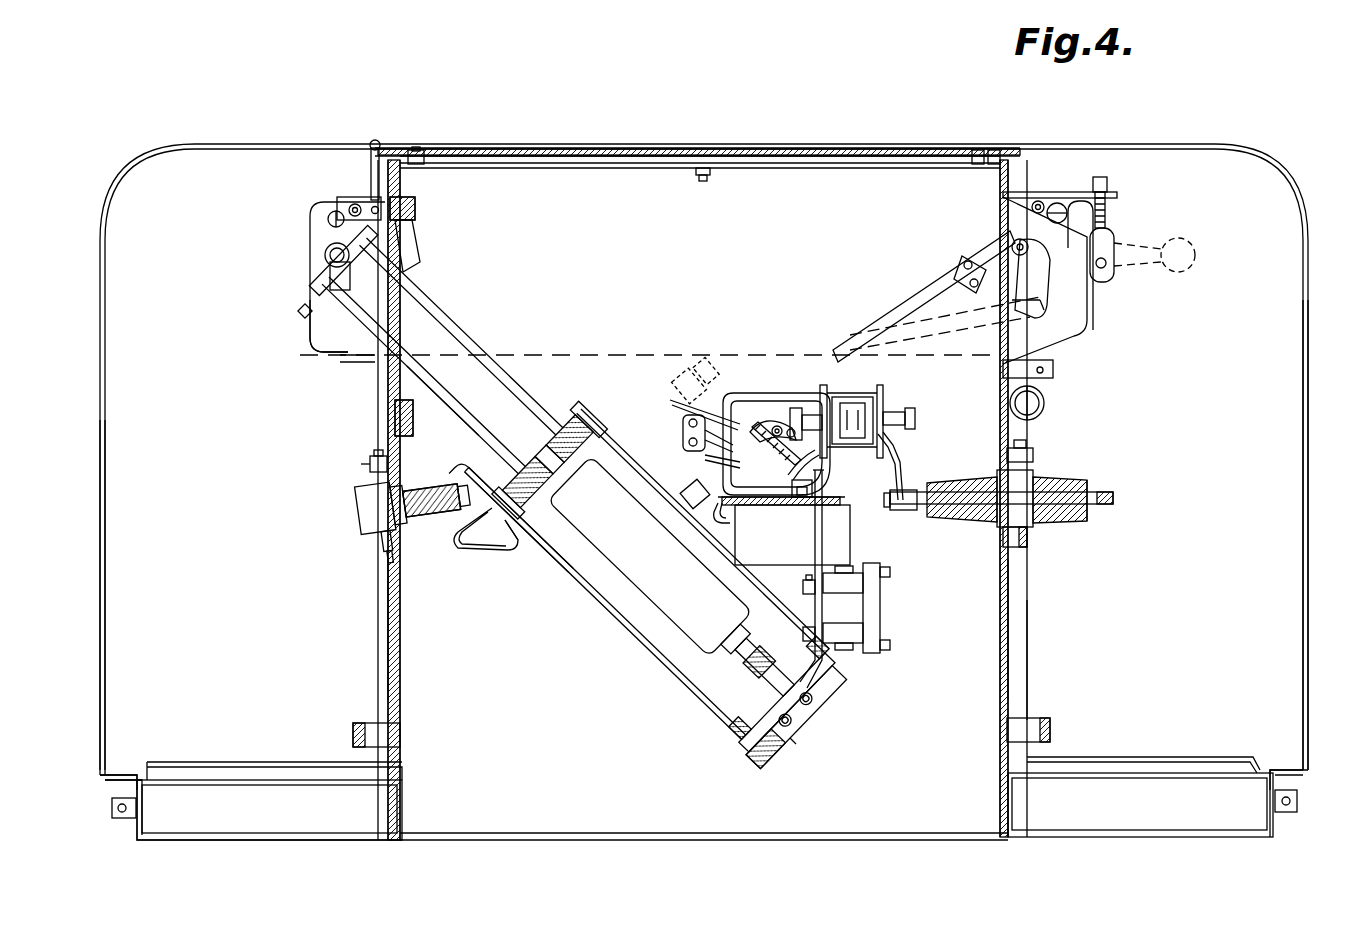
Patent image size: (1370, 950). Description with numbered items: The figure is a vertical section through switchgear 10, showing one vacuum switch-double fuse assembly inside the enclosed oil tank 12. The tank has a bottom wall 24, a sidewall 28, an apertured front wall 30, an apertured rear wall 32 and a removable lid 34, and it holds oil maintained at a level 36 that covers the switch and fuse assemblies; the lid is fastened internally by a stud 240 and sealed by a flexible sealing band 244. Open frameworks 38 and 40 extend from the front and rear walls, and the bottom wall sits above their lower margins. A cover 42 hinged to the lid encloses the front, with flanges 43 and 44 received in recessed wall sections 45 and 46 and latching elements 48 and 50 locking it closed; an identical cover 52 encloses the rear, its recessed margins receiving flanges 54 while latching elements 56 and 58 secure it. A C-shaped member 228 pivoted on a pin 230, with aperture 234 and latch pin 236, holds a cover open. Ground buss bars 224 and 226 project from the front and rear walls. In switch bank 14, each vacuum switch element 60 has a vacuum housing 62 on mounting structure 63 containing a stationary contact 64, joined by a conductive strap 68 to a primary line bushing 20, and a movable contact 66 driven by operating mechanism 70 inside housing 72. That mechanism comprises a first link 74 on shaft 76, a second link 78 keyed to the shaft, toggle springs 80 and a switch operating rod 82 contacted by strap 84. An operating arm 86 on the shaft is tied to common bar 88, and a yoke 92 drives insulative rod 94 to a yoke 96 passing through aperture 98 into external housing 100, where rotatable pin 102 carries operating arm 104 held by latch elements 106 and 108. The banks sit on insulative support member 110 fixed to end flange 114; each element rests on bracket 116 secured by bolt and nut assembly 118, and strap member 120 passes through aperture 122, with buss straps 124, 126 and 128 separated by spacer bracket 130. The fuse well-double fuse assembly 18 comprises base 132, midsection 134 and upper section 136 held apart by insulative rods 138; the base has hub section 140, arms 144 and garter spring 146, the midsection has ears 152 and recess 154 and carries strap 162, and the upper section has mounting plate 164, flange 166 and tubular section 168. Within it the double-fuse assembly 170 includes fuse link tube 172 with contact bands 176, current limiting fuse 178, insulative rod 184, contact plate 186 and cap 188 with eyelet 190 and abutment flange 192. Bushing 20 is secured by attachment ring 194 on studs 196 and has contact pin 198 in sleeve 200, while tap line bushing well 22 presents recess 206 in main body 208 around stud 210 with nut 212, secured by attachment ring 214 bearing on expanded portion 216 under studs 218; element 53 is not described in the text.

The switchgear 10 is at (1186, 98).
The oil tank 12 is at (770, 135).
The switch bank 14 is at (794, 468).
The fuse well-double fuse assembly 18 is at (582, 513).
The primary line bushing 20 is at (1034, 494).
The tap line bushing well 22 is at (376, 501).
The bottom wall 24 is at (655, 835).
The sidewall 28 is at (832, 197).
The front wall 30 is at (1008, 592).
The rear wall 32 is at (400, 645).
The lid 34 is at (535, 150).
The oil level 36 is at (650, 352).
The framework 38 is at (1168, 835).
The framework 40 is at (272, 833).
The cover 42 is at (1308, 410).
The flange 43 is at (1015, 633).
The flange 44 is at (1117, 778).
The wall section 45 is at (1027, 680).
The wall section 46 is at (1160, 757).
The latching element 48 is at (1290, 785).
The latching element 50 is at (1298, 803).
The cover 52 is at (100, 372).
The panel strip 53 is at (388, 632).
The flange 54 is at (262, 775).
The latching element 56 is at (130, 785).
The latch element 58 is at (112, 808).
The vacuum switch element 60 is at (891, 451).
The vacuum housing 62 is at (805, 412).
The mounting structure 63 is at (838, 391).
The stationary contact 64 is at (892, 442).
The movable contact 66 is at (909, 408).
The conductive strap 68 is at (922, 486).
The operating mechanism 70 is at (733, 449).
The housing 72 is at (778, 425).
The first link 74 is at (763, 420).
The shaft 76 is at (693, 404).
The second link 78 is at (730, 466).
The toggle springs 80 is at (750, 442).
The switch operating rod 82 is at (792, 427).
The conductive strap 84 is at (807, 460).
The operating arm 86 is at (718, 508).
The bar 88 is at (690, 370).
The yoke 92 is at (683, 430).
The insulative rod 94 is at (922, 305).
The yoke 96 is at (970, 262).
The aperture 98 is at (1020, 313).
The external housing 100 is at (1086, 297).
The rotatable pin 102 is at (1013, 246).
The operating arm 104 is at (1196, 250).
The latch element 106 is at (1053, 369).
The latch element 108 is at (1109, 237).
The support member 110 is at (900, 509).
The end flange 114 is at (850, 546).
The bracket 116 is at (760, 506).
The bolt and nut assembly 118 is at (805, 499).
The conductive strap member 120 is at (815, 603).
The aperture 122 is at (822, 490).
The buss strap 124 is at (866, 635).
The buss strap 126 is at (808, 577).
The buss strap 128 is at (866, 583).
The spacer bracket 130 is at (878, 607).
The base 132 is at (798, 740).
The midsection 134 is at (577, 397).
The upper section 136 is at (345, 371).
The insulative rods 138 is at (446, 306).
The hub section 140 is at (757, 735).
The arms 144 is at (772, 758).
The garter spring 146 is at (796, 725).
The ears 152 is at (540, 540).
The recess 154 is at (580, 430).
The conductive strap 162 is at (500, 560).
The mounting plate 164 is at (412, 258).
The external flange 166 is at (395, 416).
The tubular section 168 is at (322, 351).
The double-fuse assembly 170 is at (483, 370).
The fuse link tube 172 is at (755, 672).
The electrical contact bands 176 is at (672, 682).
The current limiting fuse 178 is at (620, 570).
The insulative rod 184 is at (452, 380).
The contact plate 186 is at (590, 438).
The cap 188 is at (330, 283).
The eyelet 190 is at (325, 256).
The abutment flange 192 is at (300, 312).
The attachment ring 194 is at (1026, 542).
The threaded studs 196 is at (1031, 456).
The contact pin 198 is at (1112, 498).
The sleeve 200 is at (1090, 516).
The recess 206 is at (360, 505).
The main body portion 208 is at (425, 522).
The conductive stud 210 is at (372, 492).
The nut 212 is at (488, 548).
The attachment ring 214 is at (378, 536).
The radially expanded portion 216 is at (383, 553).
The threaded studs 218 is at (372, 460).
The ground buss bar 224 is at (1052, 730).
The ground buss bar 226 is at (355, 735).
The C-shaped member 228 is at (315, 226).
The pin 230 is at (352, 207).
The aperture 234 is at (374, 205).
The latch pin 236 is at (328, 214).
The stud 240 is at (710, 180).
The sealing band 244 is at (500, 160).